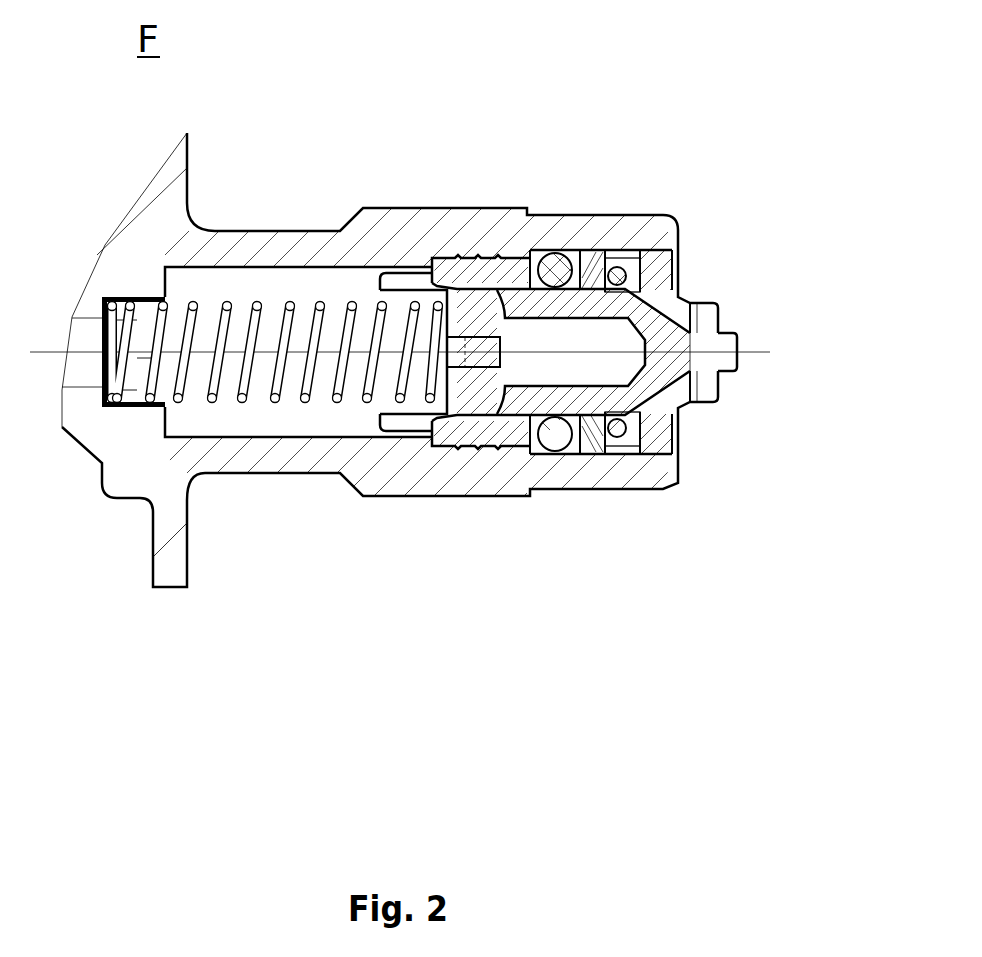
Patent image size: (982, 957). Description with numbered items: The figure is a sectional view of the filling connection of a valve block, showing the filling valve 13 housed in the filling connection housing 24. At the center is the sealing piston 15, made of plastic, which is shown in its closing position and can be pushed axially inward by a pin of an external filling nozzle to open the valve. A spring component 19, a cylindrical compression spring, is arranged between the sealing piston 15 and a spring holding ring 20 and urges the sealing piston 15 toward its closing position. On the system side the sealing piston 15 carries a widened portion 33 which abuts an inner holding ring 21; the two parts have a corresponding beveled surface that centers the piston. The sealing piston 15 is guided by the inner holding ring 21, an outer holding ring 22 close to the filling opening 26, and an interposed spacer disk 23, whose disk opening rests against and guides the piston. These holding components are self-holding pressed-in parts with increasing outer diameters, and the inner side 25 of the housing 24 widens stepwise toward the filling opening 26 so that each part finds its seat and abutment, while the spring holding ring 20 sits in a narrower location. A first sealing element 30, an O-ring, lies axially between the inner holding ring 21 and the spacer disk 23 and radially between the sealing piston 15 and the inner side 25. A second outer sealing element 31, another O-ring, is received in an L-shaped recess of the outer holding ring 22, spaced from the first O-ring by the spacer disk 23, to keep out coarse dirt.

The filling valve 13 is at (752, 407).
The sealing piston 15 is at (710, 340).
The spring component 19 is at (275, 400).
The spring holding ring 20 is at (133, 417).
The inner holding ring 21 is at (488, 440).
The outer holding ring 22 is at (643, 440).
The spacer disk 23 is at (585, 460).
The filling connection housing 24 is at (388, 225).
The inner side of the housing 25 is at (223, 437).
The filling opening 26 is at (720, 282).
The first sealing element 30 is at (555, 285).
The second outer sealing element 31 is at (617, 280).
The widened portion 33 is at (410, 432).